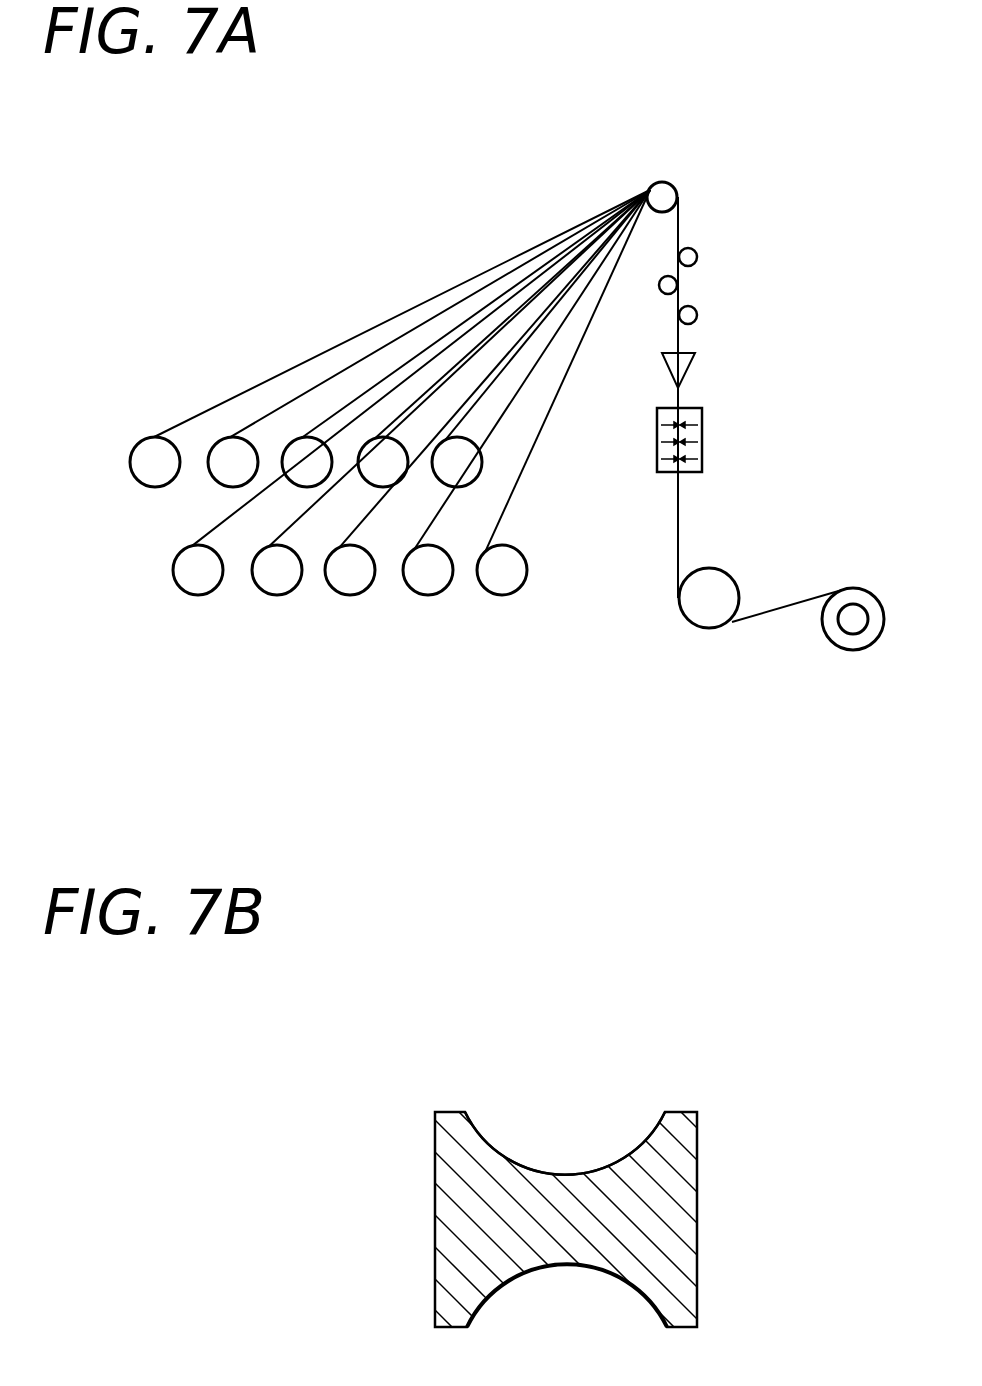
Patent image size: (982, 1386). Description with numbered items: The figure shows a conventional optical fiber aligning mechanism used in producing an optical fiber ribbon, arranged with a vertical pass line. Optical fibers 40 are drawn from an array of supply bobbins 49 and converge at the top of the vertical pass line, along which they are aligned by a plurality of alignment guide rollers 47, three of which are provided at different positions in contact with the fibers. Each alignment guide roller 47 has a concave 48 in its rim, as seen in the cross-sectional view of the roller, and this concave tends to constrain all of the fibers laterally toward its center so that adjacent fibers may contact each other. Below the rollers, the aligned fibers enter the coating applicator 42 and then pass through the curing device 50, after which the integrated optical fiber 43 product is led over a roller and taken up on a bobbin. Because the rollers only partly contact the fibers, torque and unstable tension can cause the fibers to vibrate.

In FIG. 7A, the optical fiber 40 is at (383, 373).
In FIG. 7A, the supply bobbin 49 is at (452, 477).
In FIG. 7A, the alignment guide roller 47 is at (697, 313).
In FIG. 7B, the alignment guide roller 47 is at (543, 1093).
In FIG. 7A, the coating applicator 42 is at (682, 363).
In FIG. 7A, the curing device 50 is at (702, 437).
In FIG. 7A, the optical fiber 43 is at (770, 612).
In FIG. 7B, the concave 48 is at (570, 1175).